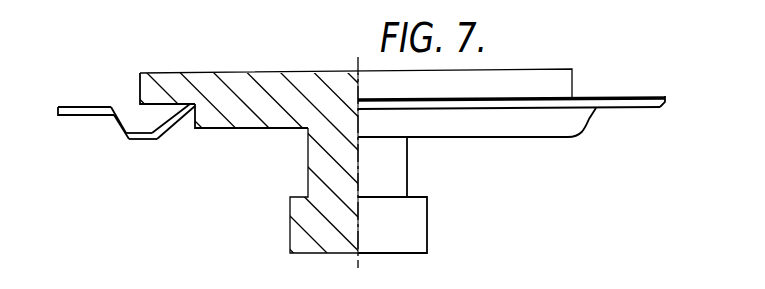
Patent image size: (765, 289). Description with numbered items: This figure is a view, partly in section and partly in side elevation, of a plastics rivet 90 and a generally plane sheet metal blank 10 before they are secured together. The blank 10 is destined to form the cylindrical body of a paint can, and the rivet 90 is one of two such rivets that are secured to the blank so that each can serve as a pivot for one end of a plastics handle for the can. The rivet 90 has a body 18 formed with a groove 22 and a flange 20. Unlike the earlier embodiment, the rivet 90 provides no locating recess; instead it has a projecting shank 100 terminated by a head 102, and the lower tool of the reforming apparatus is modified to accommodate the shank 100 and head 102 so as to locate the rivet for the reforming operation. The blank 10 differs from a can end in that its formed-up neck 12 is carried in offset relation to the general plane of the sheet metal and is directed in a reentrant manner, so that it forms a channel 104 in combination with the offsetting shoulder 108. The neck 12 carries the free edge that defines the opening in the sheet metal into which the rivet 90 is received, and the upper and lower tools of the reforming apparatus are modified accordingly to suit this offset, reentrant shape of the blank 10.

The sheet metal blank 10 is at (85, 117).
The formed-up neck 12 is at (186, 119).
The body 18 is at (332, 78).
The flange 20 is at (147, 80).
The groove 22 is at (207, 103).
The plastics rivet 90 is at (285, 136).
The projecting shank 100 is at (392, 172).
The head 102 is at (412, 222).
The channel 104 is at (142, 123).
The offsetting shoulder 108 is at (116, 123).